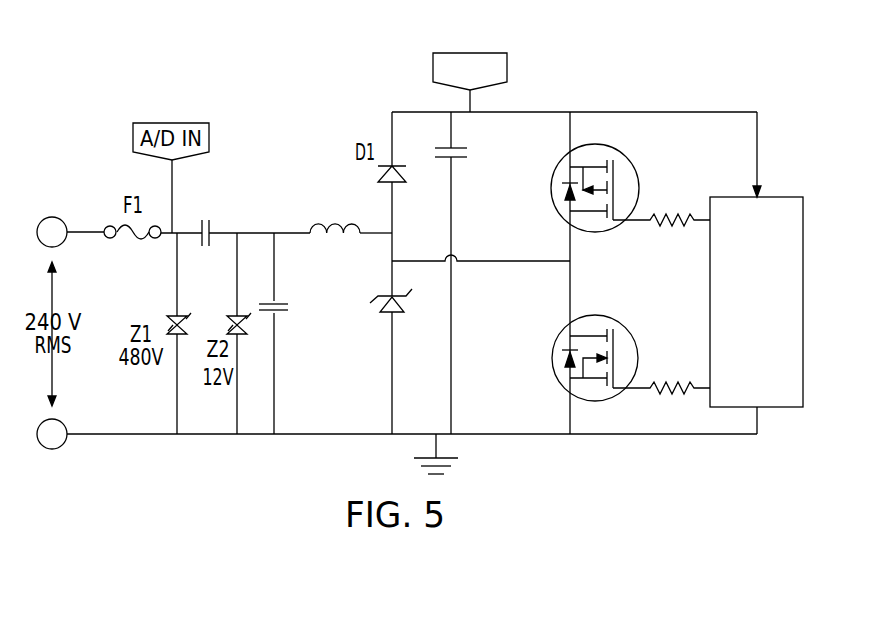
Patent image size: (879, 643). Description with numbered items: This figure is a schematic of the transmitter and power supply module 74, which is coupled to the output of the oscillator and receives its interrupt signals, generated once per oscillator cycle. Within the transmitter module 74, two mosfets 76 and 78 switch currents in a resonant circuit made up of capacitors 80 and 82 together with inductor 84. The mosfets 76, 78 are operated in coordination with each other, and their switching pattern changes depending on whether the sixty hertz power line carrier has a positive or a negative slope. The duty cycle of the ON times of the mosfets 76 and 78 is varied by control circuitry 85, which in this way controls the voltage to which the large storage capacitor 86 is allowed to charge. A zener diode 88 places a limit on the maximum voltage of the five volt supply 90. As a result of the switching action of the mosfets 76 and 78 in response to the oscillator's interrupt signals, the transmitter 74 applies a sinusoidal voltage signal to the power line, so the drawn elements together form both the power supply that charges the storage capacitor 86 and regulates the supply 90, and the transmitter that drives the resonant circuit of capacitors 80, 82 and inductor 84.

The transmitter and power supply module 74 is at (608, 100).
The mosfet 76 is at (557, 208).
The mosfet 78 is at (552, 358).
The capacitor 80 is at (282, 303).
The capacitor 82 is at (203, 249).
The inductor 84 is at (334, 224).
The control circuitry 85 is at (710, 303).
The large storage capacitor 86 is at (445, 149).
The zener diode 88 is at (384, 315).
The five volt supply 90 is at (471, 51).